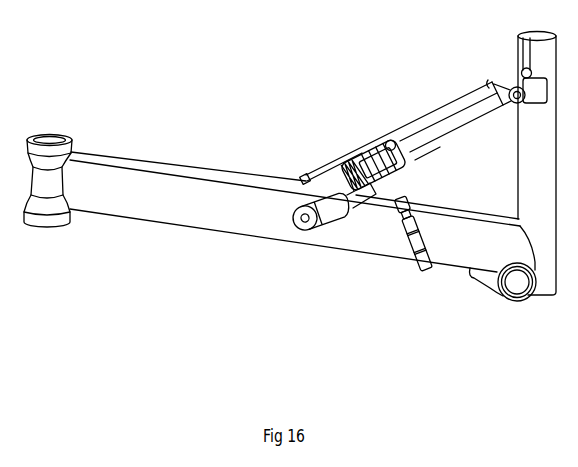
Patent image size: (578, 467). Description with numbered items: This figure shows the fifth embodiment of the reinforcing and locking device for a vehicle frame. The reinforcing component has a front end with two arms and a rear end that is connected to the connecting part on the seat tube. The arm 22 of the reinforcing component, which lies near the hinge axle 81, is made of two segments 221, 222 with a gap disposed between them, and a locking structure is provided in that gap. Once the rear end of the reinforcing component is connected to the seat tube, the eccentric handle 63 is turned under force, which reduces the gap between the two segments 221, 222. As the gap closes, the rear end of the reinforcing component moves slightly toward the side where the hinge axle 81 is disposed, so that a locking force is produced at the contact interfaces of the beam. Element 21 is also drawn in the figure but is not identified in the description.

The clamp collar 21 is at (403, 132).
The arm 22 is at (437, 133).
The segment 221 is at (358, 200).
The segment 222 is at (418, 150).
The eccentric handle 63 is at (358, 143).
The hinge axle 81 is at (425, 268).